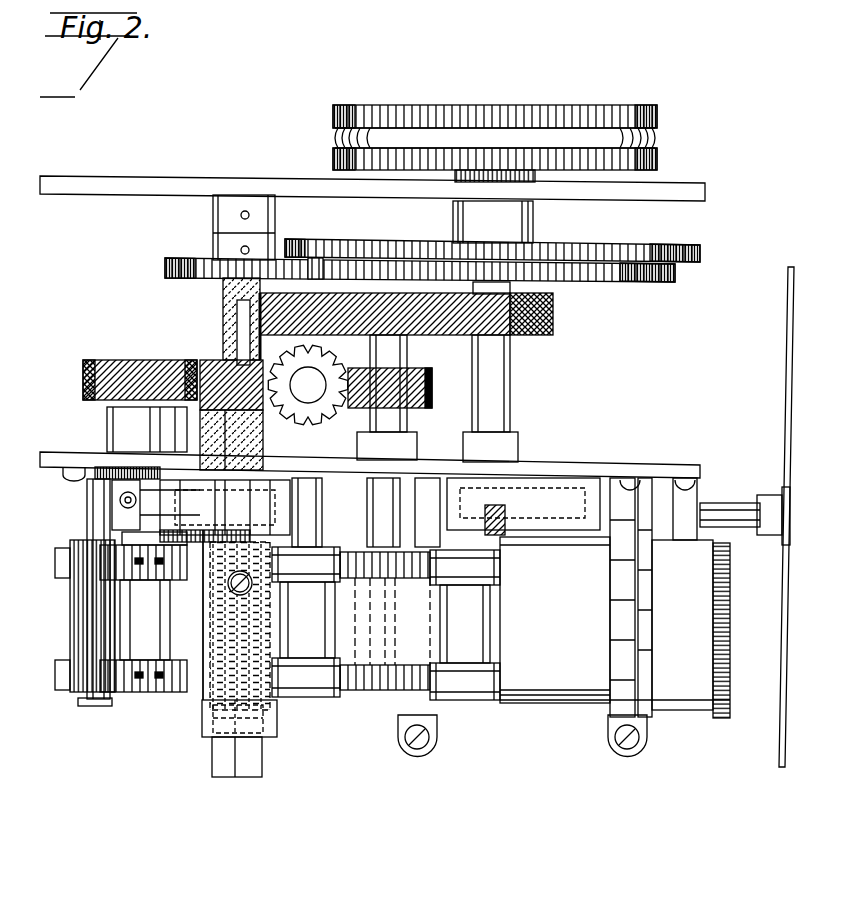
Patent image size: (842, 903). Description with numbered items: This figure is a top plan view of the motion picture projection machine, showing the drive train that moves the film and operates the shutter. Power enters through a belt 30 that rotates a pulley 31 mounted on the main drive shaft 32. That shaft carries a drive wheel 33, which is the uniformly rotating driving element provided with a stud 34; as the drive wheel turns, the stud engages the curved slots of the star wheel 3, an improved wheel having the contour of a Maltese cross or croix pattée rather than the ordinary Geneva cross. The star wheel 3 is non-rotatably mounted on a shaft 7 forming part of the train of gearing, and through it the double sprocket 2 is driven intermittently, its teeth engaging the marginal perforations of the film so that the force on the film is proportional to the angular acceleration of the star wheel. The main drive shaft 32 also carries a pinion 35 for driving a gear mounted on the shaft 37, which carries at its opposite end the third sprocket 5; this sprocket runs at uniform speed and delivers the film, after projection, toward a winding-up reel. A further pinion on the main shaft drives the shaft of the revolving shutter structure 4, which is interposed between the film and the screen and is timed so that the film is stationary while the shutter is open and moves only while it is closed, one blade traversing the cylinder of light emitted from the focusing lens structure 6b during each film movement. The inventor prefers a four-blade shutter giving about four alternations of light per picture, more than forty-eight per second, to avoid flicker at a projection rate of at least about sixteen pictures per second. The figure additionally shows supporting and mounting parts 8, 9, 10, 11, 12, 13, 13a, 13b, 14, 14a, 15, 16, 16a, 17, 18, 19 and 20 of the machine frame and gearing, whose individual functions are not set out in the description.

The double sprocket 2 is at (135, 692).
The star wheel 3 is at (215, 263).
The revolving shutter structure 4 is at (788, 391).
The third sprocket 5 is at (362, 692).
The focusing lens structure 6b is at (594, 617).
The shaft 7 is at (237, 286).
The rod 8 is at (245, 330).
The hub 9 is at (225, 366).
The sleeve 10 is at (225, 363).
The bearing block 11 is at (260, 504).
The pivot 12 is at (210, 503).
The armature lever 13 is at (200, 489).
The armature lever arm 13a is at (200, 690).
The armature lever arm 13b is at (215, 641).
The screw 14 is at (228, 584).
The screw 14a is at (262, 711).
The block 15 is at (215, 711).
The stem 16 is at (248, 690).
The slot 16a is at (210, 706).
The bearing 17 is at (135, 441).
The plate 18 is at (237, 546).
The bracket 19 is at (133, 542).
The friction disc 20 is at (115, 361).
The belt 30 is at (336, 134).
The pulley 31 is at (475, 112).
The main drive shaft 32 is at (492, 388).
The drive wheel 33 is at (390, 246).
The stud 34 is at (318, 260).
The pinion 35 is at (522, 336).
The shaft 37 is at (393, 356).